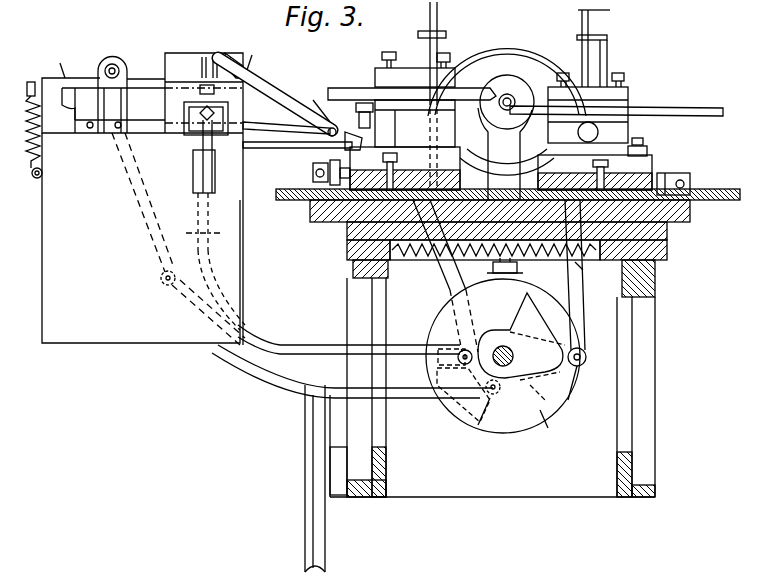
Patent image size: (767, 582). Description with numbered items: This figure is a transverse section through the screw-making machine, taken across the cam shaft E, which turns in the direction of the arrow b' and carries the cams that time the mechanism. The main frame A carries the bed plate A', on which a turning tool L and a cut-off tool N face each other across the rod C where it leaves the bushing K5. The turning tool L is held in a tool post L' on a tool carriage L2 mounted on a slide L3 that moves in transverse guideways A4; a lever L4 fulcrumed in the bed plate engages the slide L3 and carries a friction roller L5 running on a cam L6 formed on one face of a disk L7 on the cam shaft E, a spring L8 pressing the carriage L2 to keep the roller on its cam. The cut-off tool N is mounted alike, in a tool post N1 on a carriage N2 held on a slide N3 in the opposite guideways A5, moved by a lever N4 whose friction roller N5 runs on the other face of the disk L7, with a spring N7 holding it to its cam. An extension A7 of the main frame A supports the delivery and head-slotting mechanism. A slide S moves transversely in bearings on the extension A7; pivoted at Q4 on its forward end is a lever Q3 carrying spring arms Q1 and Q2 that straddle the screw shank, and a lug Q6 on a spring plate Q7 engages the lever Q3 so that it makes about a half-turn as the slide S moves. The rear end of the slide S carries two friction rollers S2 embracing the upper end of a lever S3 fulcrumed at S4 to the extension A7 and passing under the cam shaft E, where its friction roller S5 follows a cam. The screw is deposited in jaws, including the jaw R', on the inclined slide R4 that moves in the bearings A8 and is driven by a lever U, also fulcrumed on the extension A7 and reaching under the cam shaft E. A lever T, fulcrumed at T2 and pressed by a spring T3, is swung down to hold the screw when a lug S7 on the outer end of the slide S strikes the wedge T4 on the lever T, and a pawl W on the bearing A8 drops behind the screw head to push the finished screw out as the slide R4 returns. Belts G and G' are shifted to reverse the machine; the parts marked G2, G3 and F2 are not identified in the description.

The lever T is at (155, 88).
The fulcrum T2 is at (112, 63).
The spring T3 is at (31, 135).
The wedge T4 is at (55, 62).
The slide S is at (150, 148).
The pins S2 is at (90, 130).
The lever S3 is at (268, 380).
The fulcrum S4 is at (163, 283).
The friction roller S5 is at (484, 414).
The wedge or lug S7 is at (72, 100).
The jaw R' is at (184, 116).
The slide R4 is at (185, 135).
The lever U is at (205, 165).
The main frame A is at (491, 416).
The bed plate A' is at (654, 278).
The guideways A4 is at (688, 222).
The guideways A5 is at (310, 222).
The extension A7 is at (141, 238).
The bearings A8 is at (165, 60).
The pawl W is at (203, 62).
The spring arm Q1 is at (247, 53).
The spring arm Q2 is at (222, 58).
The lever Q3 is at (300, 82).
The pivot Q4 is at (317, 111).
The lug Q6 is at (381, 118).
The spring plate Q7 is at (300, 146).
The cut-off tool N is at (452, 98).
The tool post N1 is at (375, 75).
The carriage N2 is at (345, 160).
The slide N3 is at (295, 200).
The lever N4 is at (440, 285).
The friction roller N5 is at (458, 352).
The spring N7 is at (489, 269).
The belt G is at (412, 51).
The belt G' is at (602, 48).
The collar G2 is at (445, 33).
The collar G3 is at (608, 38).
The rod C is at (507, 112).
The wheel rim F2 is at (525, 40).
The bushing K5 is at (512, 93).
The turning tool L is at (505, 154).
The tool post L' is at (616, 113).
The tool carriage L2 is at (652, 157).
The slide L3 is at (735, 190).
The lever L4 is at (578, 298).
The friction roller L5 is at (580, 366).
The cam L6 is at (581, 390).
The disk L7 is at (553, 428).
The spring L8 is at (587, 272).
The cam shaft E is at (503, 345).
The arrow b' is at (515, 407).